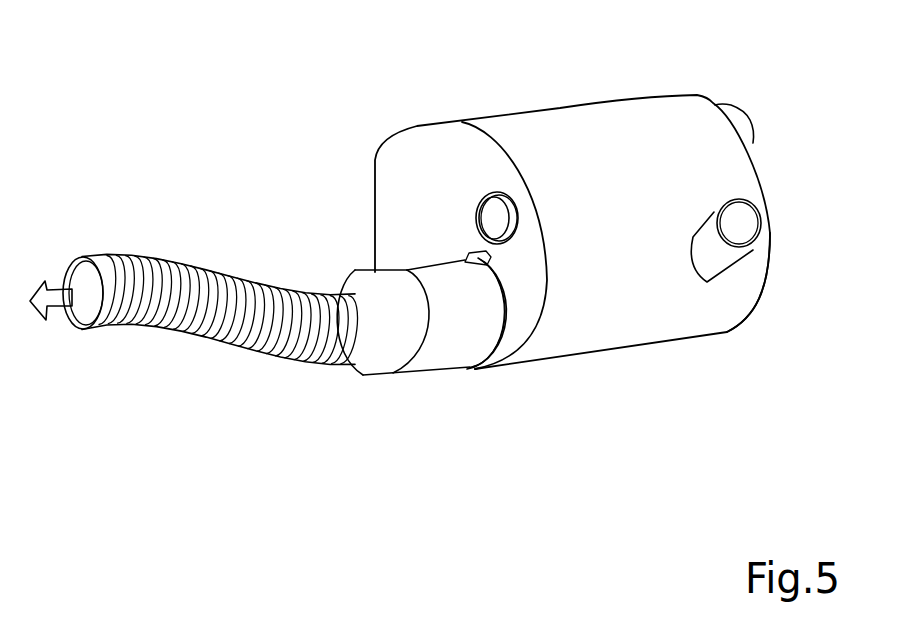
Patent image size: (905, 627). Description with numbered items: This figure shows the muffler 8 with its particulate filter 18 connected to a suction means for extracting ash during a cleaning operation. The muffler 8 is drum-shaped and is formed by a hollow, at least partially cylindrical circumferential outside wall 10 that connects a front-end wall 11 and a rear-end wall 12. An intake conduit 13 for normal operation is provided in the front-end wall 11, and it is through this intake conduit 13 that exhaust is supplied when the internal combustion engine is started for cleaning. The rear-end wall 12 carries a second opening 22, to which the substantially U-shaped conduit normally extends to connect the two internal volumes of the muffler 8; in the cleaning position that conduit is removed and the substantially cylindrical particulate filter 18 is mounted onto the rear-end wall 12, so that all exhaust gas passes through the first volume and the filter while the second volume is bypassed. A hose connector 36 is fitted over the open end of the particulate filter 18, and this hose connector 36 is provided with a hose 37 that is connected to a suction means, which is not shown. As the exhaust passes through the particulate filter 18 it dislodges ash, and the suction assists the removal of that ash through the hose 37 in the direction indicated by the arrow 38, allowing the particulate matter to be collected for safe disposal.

The muffler 8 is at (599, 211).
The circumferential outside wall 10 is at (575, 120).
The front-end wall 11 is at (755, 323).
The rear-end wall 12 is at (412, 178).
The intake conduit 13 is at (792, 236).
The particulate filter 18 is at (448, 348).
The second opening 22 is at (495, 213).
The hose connector 36 is at (400, 368).
The hose 37 is at (248, 338).
The arrow 38 is at (37, 313).